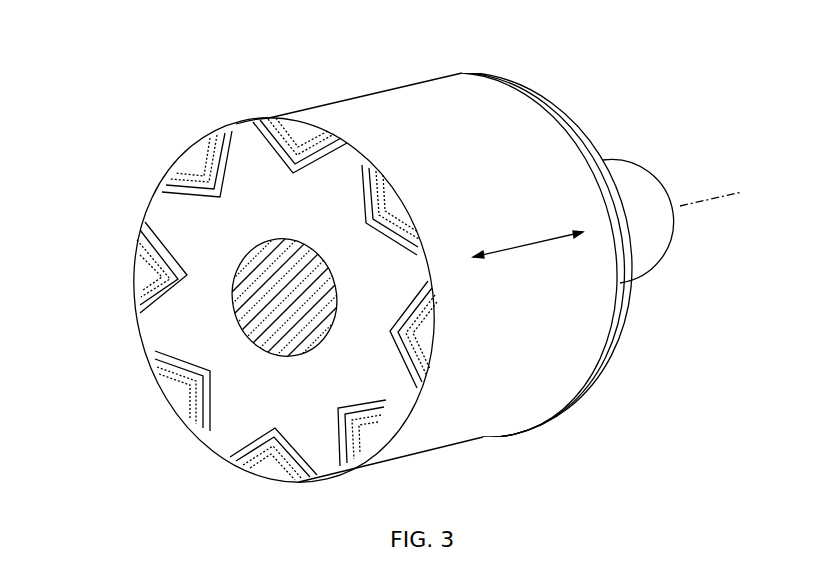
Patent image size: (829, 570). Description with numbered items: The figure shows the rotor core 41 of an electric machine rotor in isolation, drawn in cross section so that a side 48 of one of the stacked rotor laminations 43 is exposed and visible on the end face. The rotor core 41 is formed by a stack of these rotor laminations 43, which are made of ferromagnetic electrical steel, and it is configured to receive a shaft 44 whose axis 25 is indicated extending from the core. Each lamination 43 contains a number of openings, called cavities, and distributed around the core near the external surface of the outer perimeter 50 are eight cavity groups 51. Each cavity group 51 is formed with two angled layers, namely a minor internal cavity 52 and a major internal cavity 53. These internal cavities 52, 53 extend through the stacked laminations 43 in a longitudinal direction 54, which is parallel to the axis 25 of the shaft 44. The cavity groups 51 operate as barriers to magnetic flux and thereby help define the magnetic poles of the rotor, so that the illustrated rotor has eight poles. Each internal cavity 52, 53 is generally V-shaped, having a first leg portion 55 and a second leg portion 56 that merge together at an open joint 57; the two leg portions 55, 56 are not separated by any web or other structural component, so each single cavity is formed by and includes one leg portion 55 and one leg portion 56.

The rotor core 41 is at (403, 85).
The rotor laminations 43 is at (266, 118).
The side of lamination 48 is at (243, 119).
The outer perimeter 50 is at (141, 323).
The cavity groups 51 is at (121, 263).
The minor internal cavity 52 is at (383, 186).
The major internal cavity 53 is at (365, 167).
The first leg portion 55 is at (420, 292).
The open joint 57 is at (389, 331).
The second leg portion 56 is at (412, 375).
The longitudinal direction 54 is at (525, 242).
The shaft 44 is at (620, 159).
The axis 25 is at (714, 192).